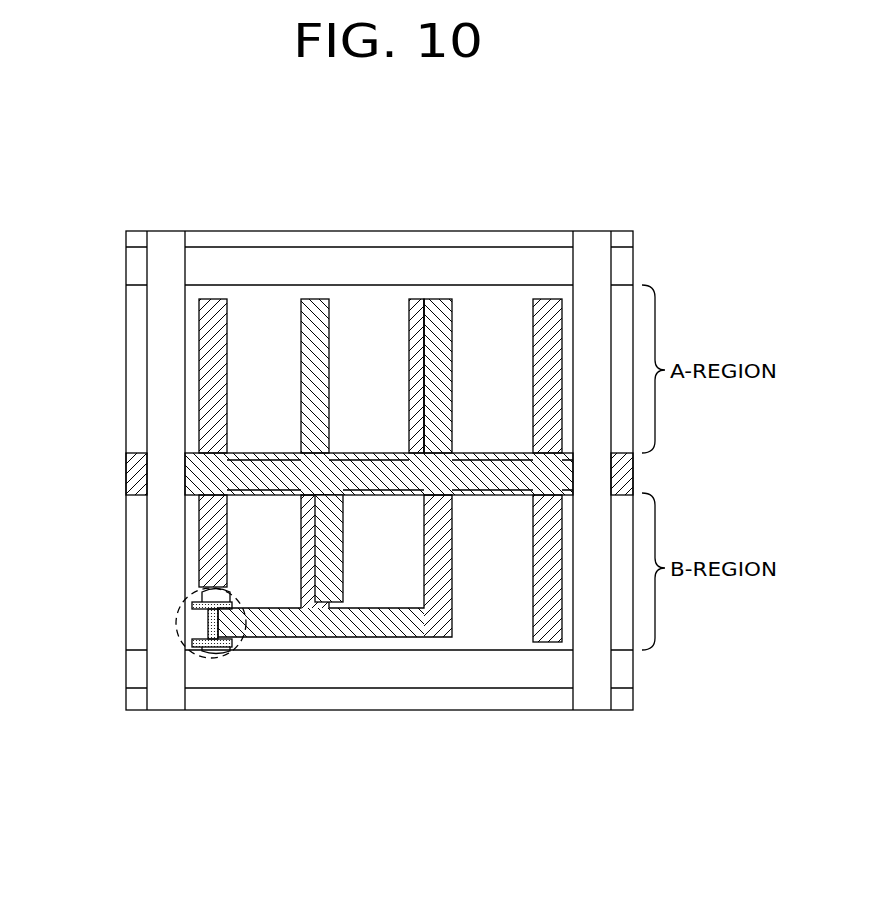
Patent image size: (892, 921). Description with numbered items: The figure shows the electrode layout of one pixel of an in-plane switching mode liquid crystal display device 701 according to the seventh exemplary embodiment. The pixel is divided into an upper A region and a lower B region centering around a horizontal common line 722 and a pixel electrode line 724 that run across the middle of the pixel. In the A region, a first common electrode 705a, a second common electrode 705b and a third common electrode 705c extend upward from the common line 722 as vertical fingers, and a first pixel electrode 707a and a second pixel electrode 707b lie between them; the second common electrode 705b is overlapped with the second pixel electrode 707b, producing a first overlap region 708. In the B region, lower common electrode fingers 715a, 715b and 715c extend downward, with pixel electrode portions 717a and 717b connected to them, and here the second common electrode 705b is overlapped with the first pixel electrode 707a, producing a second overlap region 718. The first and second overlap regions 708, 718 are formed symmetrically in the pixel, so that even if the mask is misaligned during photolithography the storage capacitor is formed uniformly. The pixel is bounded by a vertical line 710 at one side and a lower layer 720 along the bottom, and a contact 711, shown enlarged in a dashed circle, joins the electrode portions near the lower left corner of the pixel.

The semiconductor device 701 is at (655, 237).
The first lower electrode pattern 705a is at (217, 299).
The second common electrode 705b is at (416, 299).
The third lower electrode pattern 705c is at (546, 299).
The first pixel electrode 707a is at (313, 299).
The second pixel electrode 707b is at (446, 299).
The first overlap region 708 is at (429, 299).
The vertical insulating wall 710 is at (165, 698).
The contact plug structure 711 is at (177, 620).
The first lower conductive pattern 715a is at (207, 543).
The second lower conductive pattern 715b is at (280, 608).
The third lower conductive pattern 715c is at (543, 642).
The horizontal connecting pattern 717a is at (283, 640).
The vertical connecting pattern 717b is at (438, 640).
The second overlap region 718 is at (323, 605).
The lower insulating layer 720 is at (228, 678).
The common line 722 is at (130, 481).
The pixel electrode line 724 is at (203, 462).